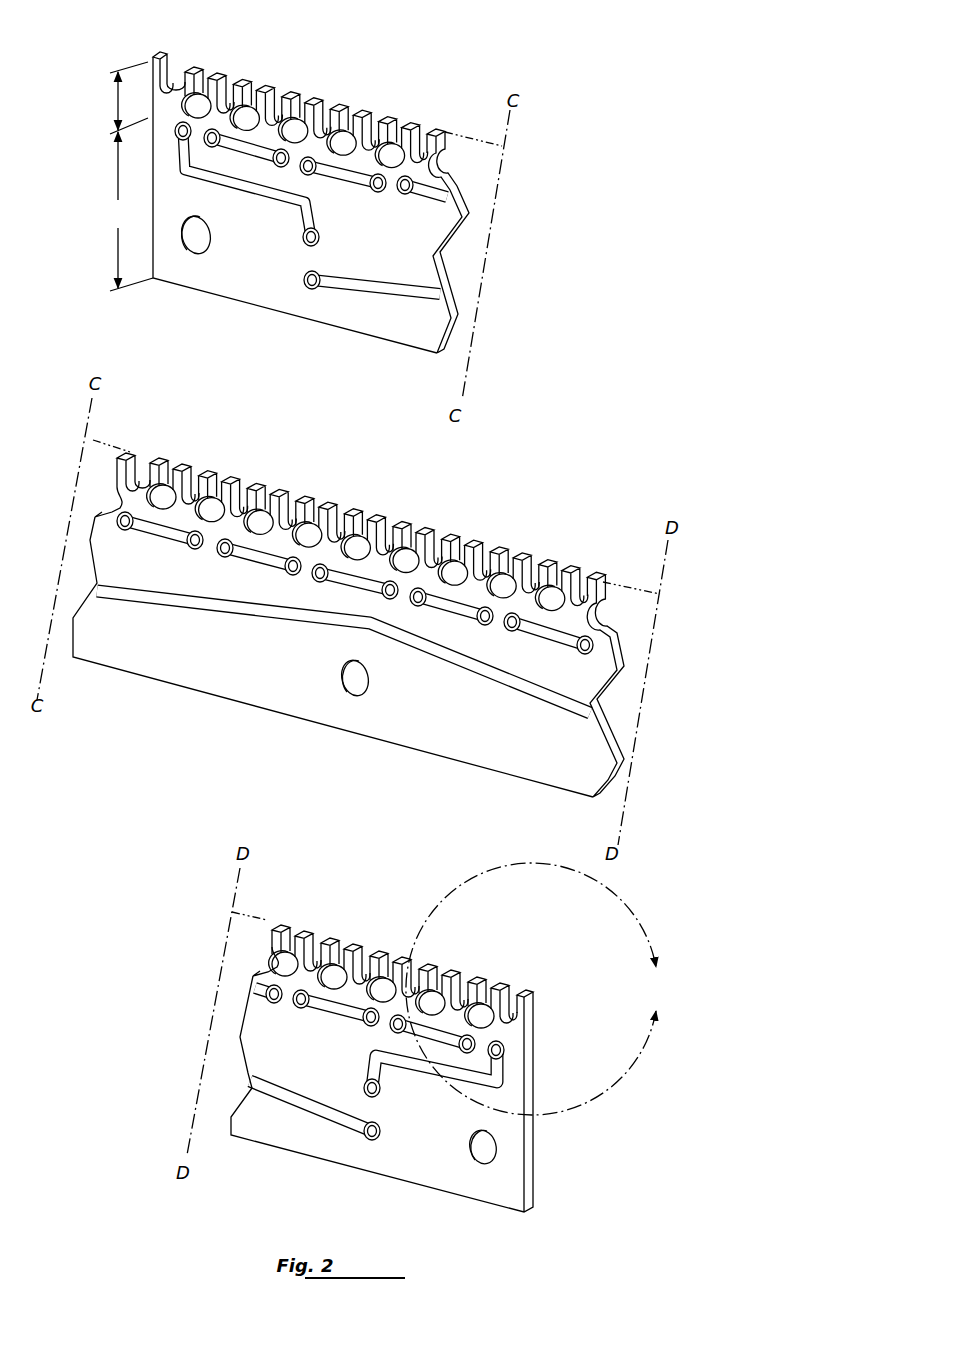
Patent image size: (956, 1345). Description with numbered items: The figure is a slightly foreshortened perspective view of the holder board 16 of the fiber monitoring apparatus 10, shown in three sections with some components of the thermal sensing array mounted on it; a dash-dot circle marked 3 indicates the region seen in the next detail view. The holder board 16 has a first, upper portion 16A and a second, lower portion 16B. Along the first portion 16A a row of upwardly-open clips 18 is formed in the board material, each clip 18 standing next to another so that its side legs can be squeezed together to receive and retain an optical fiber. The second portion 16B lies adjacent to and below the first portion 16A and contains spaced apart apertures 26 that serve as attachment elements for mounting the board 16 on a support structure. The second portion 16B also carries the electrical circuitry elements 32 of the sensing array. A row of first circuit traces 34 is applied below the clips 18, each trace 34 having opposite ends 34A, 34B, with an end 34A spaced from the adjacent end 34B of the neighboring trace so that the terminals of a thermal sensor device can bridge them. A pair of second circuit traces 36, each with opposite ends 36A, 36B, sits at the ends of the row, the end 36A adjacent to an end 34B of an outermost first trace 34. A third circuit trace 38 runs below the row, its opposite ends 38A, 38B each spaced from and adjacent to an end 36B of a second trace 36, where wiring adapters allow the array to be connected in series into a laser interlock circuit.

The fiber monitoring apparatus 10 is at (554, 112).
The holder board 16 is at (292, 298).
The first portion 16A is at (117, 102).
The second portion 16B is at (127, 211).
The clips 18 is at (177, 64).
The apertures 26 is at (196, 255).
The electrical circuitry elements 32 is at (461, 205).
The first circuit traces 34 is at (255, 152).
The opposite end of first circuit trace 34A is at (280, 149).
The opposite end of first circuit trace 34B is at (311, 158).
The second circuit traces 36 is at (242, 188).
The opposite end of second circuit trace 36A is at (176, 134).
The opposite end of second circuit trace 36B is at (303, 239).
The third circuit trace 38 is at (420, 293).
The opposite end of third circuit trace 38A is at (372, 1141).
The opposite end of third circuit trace 38B is at (312, 290).
The detail view reference circle for FIG. 3 is at (653, 1002).